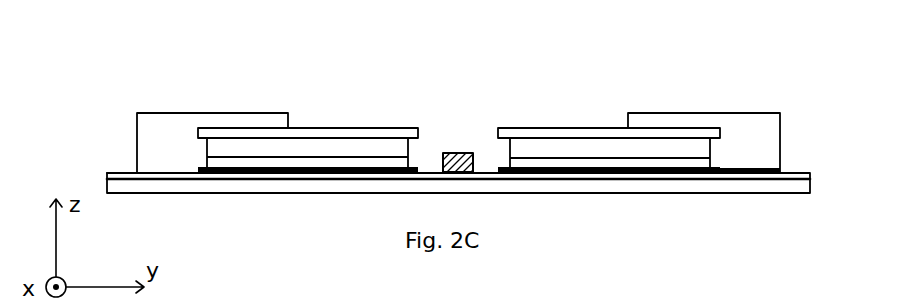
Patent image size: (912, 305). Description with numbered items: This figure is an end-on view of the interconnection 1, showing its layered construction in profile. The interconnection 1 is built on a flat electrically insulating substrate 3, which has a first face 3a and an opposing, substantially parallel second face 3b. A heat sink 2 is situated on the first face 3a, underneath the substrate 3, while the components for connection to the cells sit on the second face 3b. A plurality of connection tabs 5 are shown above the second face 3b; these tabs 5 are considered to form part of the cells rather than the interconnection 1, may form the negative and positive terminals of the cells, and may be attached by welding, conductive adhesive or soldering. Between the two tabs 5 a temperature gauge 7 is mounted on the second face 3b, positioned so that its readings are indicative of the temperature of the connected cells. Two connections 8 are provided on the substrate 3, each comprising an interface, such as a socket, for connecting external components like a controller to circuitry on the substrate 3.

The interconnection 1 is at (291, 74).
The heat sink 2 is at (648, 187).
The electrically insulating substrate 3 is at (813, 175).
The first face 3a is at (795, 180).
The second face 3b is at (782, 173).
The connection tabs 5 is at (388, 129).
The temperature gauges 7 is at (450, 153).
The connection 8 is at (208, 113).